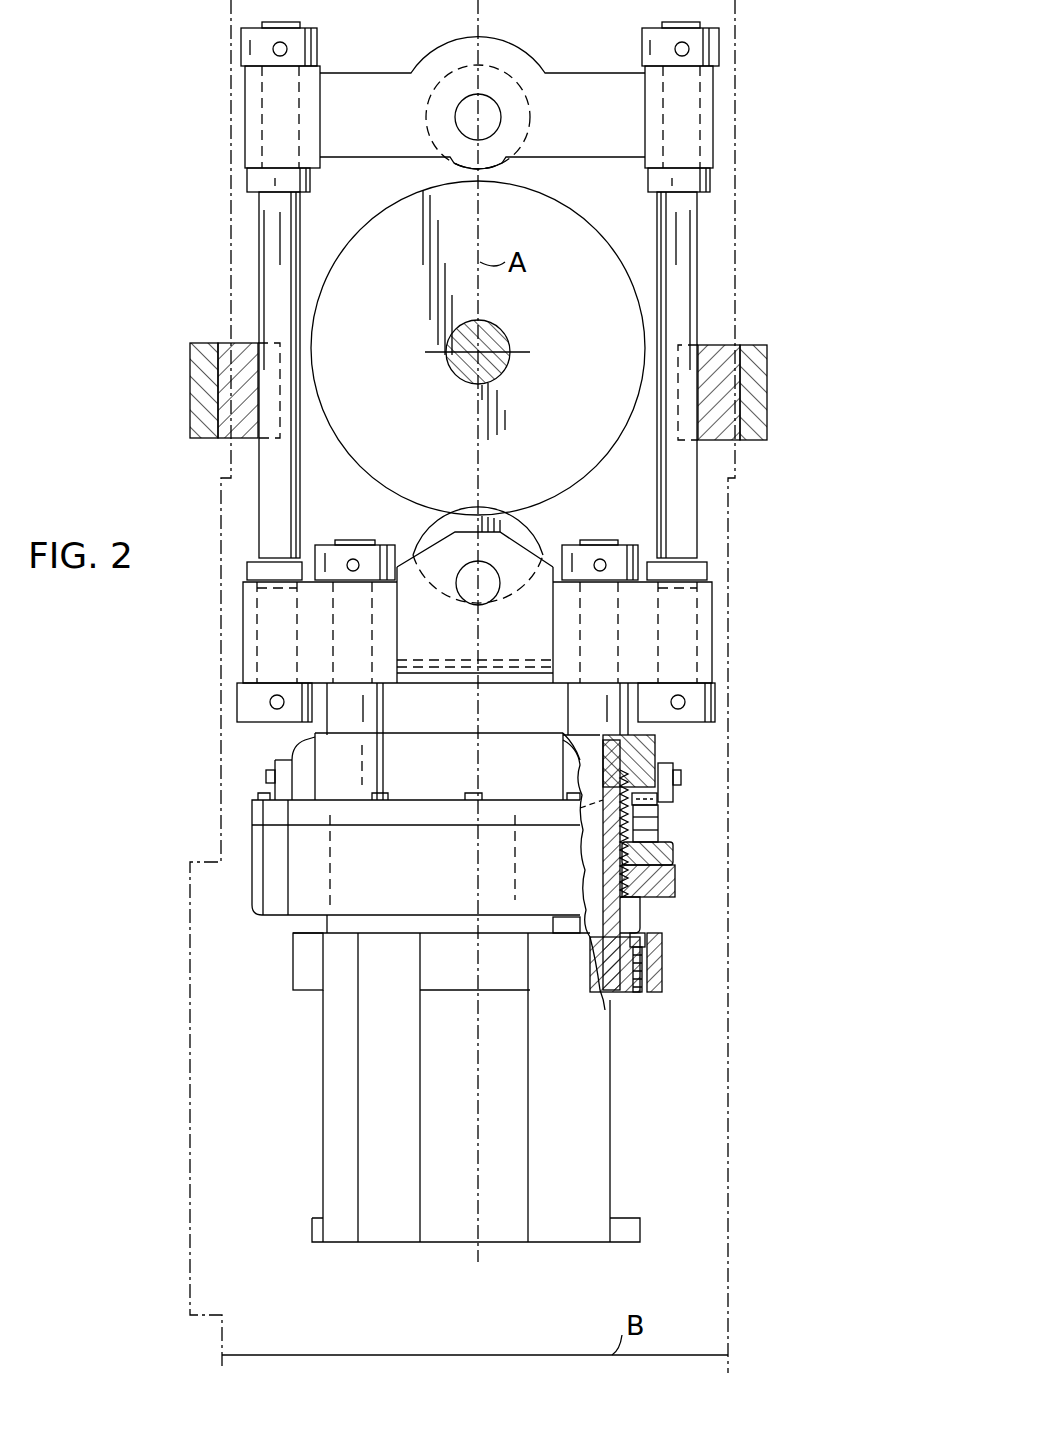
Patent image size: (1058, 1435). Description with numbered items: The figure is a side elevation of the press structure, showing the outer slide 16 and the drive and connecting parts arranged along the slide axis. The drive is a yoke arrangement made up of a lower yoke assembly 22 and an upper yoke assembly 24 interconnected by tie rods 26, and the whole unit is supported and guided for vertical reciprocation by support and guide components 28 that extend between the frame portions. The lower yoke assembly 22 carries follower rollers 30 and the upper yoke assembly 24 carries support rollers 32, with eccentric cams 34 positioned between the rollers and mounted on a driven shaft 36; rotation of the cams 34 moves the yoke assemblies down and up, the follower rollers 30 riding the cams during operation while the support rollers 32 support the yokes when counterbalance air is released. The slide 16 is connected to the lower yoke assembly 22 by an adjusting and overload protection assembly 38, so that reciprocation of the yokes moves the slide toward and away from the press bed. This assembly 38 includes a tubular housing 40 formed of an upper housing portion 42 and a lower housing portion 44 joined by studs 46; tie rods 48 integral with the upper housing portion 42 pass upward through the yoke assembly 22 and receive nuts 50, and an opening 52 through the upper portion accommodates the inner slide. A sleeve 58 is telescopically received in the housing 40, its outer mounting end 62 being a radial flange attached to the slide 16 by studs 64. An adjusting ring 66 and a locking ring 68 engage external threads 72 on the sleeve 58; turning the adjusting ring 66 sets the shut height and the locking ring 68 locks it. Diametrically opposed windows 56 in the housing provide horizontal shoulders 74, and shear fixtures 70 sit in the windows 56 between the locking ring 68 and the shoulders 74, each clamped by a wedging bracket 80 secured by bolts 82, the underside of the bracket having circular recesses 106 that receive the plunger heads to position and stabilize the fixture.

The outer slide 16 is at (600, 1108).
The lower yoke assembly 22 is at (718, 626).
The upper yoke assembly 24 is at (722, 118).
The tie rods 26 is at (262, 250).
The support and guide components 28 is at (207, 343).
The follower rollers 30 is at (525, 545).
The support rollers 32 is at (508, 168).
The cams 34 is at (607, 240).
The driven shaft 36 is at (495, 328).
The adjusting and overload protection assembly 38 is at (252, 880).
The tubular housing 40 is at (252, 830).
The upper housing portion 42 is at (494, 748).
The lower housing portion 44 is at (438, 900).
The studs 46 is at (258, 796).
The tie rods 48 is at (383, 716).
The nuts 50 is at (383, 545).
The opening 52 is at (598, 735).
The windows 56 is at (690, 795).
The sleeve 58 is at (605, 870).
The outer or mounting end 62 is at (635, 995).
The studs 64 is at (662, 972).
The adjusting ring 66 is at (670, 890).
The locking ring 68 is at (675, 855).
The shear fixtures 70 is at (670, 833).
The external threads 72 is at (635, 905).
The horizontal shoulders 74 is at (657, 799).
The wedging bracket 80 is at (282, 765).
The bolts 82 is at (266, 776).
The circular recesses 106 is at (580, 808).